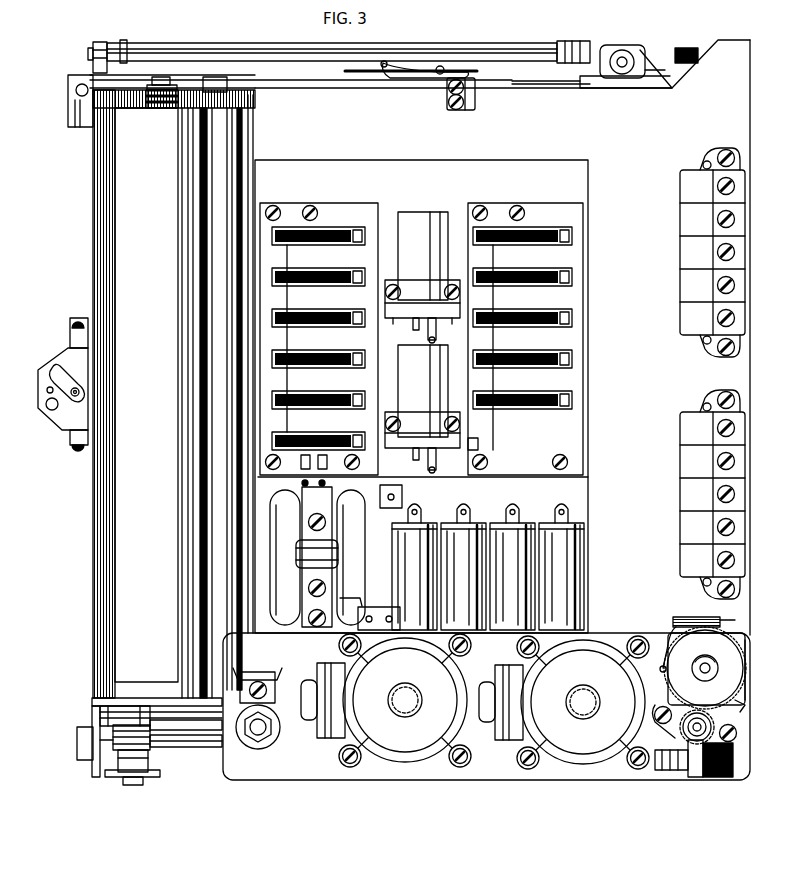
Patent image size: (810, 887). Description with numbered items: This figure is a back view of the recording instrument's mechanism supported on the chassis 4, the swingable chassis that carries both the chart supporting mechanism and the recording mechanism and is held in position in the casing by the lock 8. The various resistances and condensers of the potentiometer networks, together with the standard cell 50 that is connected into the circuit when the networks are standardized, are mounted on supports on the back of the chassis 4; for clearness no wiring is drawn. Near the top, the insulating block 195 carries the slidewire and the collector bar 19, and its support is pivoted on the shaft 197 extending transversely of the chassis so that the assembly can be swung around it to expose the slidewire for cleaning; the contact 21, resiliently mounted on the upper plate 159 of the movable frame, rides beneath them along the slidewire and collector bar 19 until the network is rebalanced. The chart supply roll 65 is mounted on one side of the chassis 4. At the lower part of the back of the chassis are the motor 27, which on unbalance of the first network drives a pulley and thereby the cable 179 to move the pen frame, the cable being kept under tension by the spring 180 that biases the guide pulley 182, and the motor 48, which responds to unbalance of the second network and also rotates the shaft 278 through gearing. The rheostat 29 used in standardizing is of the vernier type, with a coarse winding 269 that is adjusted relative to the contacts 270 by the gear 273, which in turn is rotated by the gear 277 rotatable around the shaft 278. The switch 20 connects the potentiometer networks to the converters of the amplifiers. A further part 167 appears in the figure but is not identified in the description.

The chassis 4 is at (742, 102).
The lock 8 is at (56, 363).
The collector bar 19 is at (516, 62).
The switch 20 is at (733, 760).
The contact 21 is at (400, 66).
The motor 27 is at (395, 745).
The rheostat 29 is at (753, 636).
The motor 48 is at (603, 742).
The standard cell 50 is at (299, 508).
The chart supply roll 65 is at (112, 222).
The upper plate 159 is at (389, 86).
The shaft 167 is at (188, 744).
The cable 179 is at (196, 776).
The spring 180 is at (112, 740).
The guide pulley 182 is at (112, 776).
The insulating block 195 is at (402, 51).
The shaft 197 is at (108, 80).
The coarse winding 269 is at (733, 672).
The contacts 270 is at (668, 632).
The gear 273 is at (740, 702).
The gear 277 is at (713, 720).
The shaft 278 is at (687, 733).